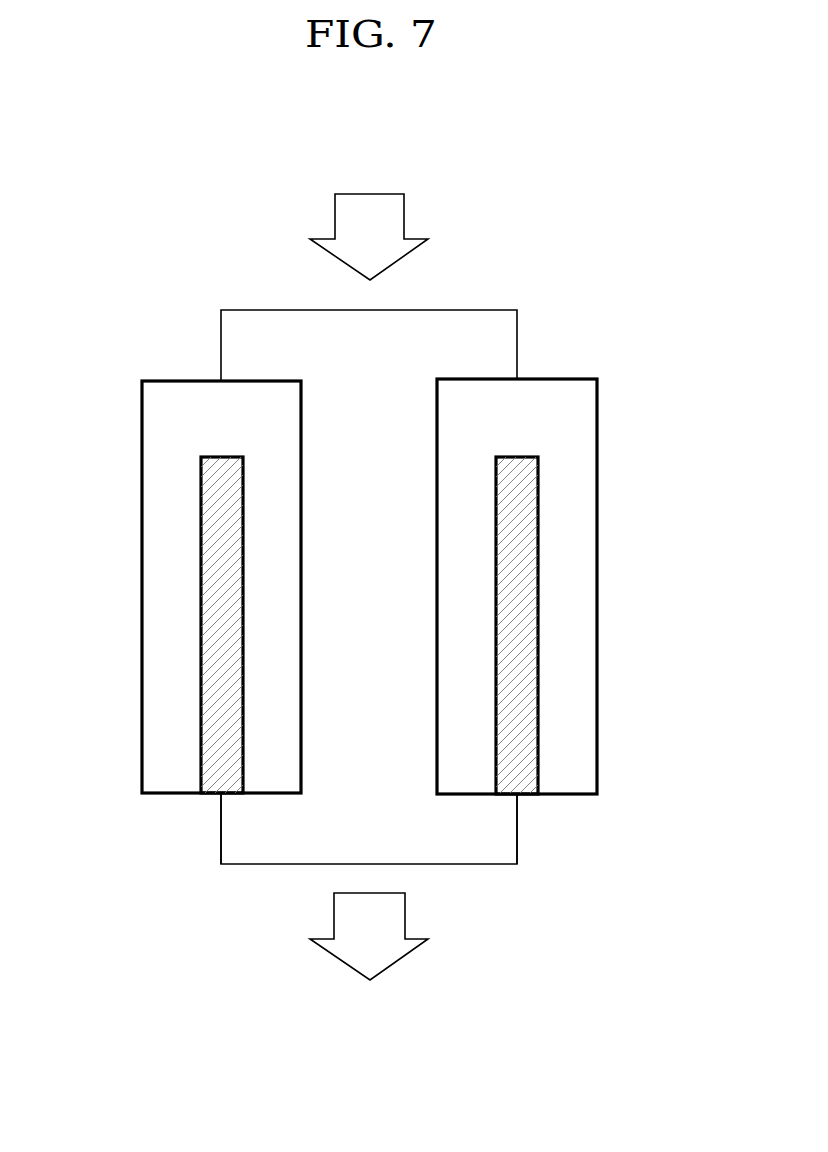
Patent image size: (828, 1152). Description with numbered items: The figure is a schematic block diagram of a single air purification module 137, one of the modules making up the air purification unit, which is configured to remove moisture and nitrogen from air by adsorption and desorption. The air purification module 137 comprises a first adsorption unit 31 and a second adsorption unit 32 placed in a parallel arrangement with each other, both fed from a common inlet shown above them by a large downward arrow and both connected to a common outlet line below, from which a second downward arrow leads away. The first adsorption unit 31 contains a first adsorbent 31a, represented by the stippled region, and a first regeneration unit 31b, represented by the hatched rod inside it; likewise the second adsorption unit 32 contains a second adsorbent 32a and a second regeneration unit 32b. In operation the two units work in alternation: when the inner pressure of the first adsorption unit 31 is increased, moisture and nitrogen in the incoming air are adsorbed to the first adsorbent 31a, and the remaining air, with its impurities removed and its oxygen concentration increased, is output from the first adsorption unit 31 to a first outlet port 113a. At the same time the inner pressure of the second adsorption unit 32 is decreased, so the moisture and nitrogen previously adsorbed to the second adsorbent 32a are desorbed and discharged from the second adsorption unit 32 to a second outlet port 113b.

The air purification module 137 is at (168, 230).
The first adsorption unit 31 is at (142, 584).
The first adsorbent 31a is at (160, 447).
The first regeneration unit 31b is at (215, 528).
The second adsorption unit 32 is at (598, 588).
The second adsorbent 32a is at (575, 443).
The second regeneration unit 32b is at (525, 520).
The first outlet port 113a is at (221, 840).
The second outlet port 113b is at (518, 840).